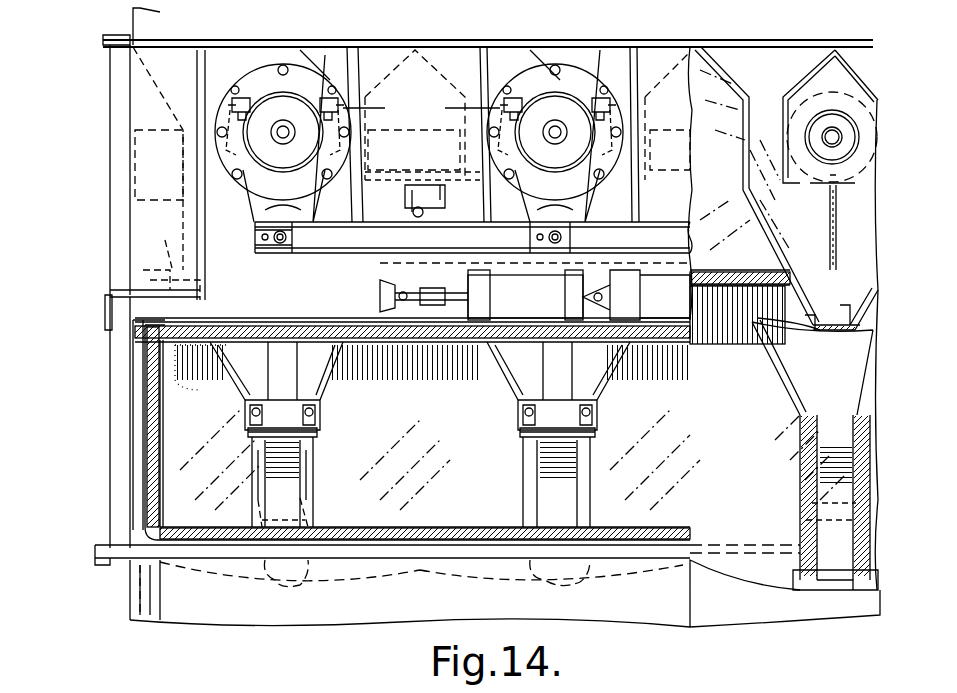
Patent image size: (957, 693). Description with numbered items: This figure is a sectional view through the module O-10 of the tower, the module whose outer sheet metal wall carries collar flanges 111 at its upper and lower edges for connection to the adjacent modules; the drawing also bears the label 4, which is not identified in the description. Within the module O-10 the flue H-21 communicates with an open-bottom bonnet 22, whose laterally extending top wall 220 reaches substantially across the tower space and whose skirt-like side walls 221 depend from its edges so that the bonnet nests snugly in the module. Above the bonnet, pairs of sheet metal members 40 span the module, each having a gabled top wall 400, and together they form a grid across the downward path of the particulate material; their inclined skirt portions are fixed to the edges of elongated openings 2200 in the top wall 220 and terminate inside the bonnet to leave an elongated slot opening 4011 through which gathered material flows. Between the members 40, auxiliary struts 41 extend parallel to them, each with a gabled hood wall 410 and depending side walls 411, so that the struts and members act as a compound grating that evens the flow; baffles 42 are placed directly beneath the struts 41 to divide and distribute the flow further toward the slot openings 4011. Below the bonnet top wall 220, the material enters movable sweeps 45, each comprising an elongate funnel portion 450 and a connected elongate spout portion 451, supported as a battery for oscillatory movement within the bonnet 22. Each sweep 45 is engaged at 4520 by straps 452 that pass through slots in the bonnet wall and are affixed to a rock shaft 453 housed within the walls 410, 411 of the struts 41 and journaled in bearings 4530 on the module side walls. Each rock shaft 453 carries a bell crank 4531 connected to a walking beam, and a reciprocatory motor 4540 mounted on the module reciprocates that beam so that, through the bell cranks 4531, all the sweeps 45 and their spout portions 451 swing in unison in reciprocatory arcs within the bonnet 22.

The bottom dumping device 4 is at (98, 110).
The module O-10 is at (100, 133).
The collar flange 111 is at (104, 42).
The bonnet 22 is at (125, 338).
The top wall 220 is at (167, 235).
The side wall 221 is at (120, 282).
The flue H-21 is at (160, 438).
The member 40 is at (433, 62).
The gabled top wall 400 is at (715, 75).
The strut 41 is at (300, 58).
The top wall 410 is at (802, 75).
The side wall 411 is at (781, 115).
The baffle 42 is at (828, 212).
The slot opening 4011 is at (838, 322).
The elongated opening 2200 is at (782, 272).
The sweep 45 is at (296, 496).
The funnel portion 450 is at (228, 385).
The spout portion 451 is at (290, 509).
The strap 452 is at (282, 373).
The engagement 4520 is at (320, 440).
The rock shaft 453 is at (283, 132).
The bearing 4530 is at (421, 108).
The bell crank 4531 is at (300, 226).
The reciprocatory motor 4540 is at (513, 288).